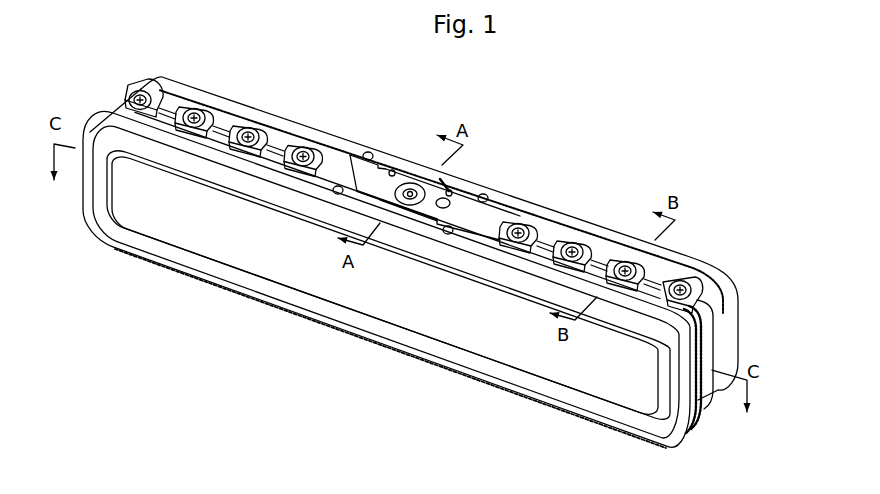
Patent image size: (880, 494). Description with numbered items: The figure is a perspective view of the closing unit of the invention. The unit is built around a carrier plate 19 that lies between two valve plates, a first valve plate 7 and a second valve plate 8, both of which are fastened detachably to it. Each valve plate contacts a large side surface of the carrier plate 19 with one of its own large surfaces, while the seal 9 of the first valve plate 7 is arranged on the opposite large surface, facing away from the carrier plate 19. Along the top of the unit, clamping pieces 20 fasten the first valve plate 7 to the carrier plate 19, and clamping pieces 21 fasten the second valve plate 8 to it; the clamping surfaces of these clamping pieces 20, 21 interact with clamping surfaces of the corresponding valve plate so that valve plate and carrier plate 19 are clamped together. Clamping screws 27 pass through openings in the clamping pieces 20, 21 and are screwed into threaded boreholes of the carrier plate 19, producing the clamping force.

The first valve plate 7 is at (583, 387).
The second valve plate 8 is at (683, 265).
The seal 9 is at (542, 396).
The carrier plate 19 is at (713, 395).
The clamping pieces 20 is at (503, 223).
The clamping pieces 21 is at (155, 90).
The clamping screws 27 is at (249, 130).